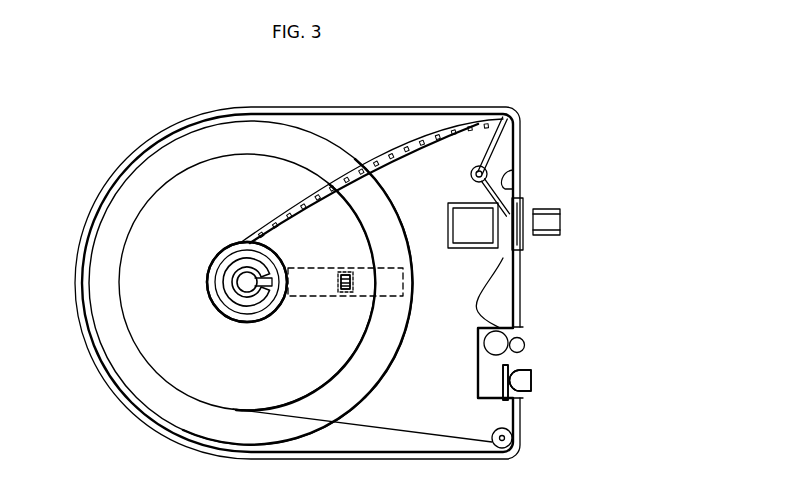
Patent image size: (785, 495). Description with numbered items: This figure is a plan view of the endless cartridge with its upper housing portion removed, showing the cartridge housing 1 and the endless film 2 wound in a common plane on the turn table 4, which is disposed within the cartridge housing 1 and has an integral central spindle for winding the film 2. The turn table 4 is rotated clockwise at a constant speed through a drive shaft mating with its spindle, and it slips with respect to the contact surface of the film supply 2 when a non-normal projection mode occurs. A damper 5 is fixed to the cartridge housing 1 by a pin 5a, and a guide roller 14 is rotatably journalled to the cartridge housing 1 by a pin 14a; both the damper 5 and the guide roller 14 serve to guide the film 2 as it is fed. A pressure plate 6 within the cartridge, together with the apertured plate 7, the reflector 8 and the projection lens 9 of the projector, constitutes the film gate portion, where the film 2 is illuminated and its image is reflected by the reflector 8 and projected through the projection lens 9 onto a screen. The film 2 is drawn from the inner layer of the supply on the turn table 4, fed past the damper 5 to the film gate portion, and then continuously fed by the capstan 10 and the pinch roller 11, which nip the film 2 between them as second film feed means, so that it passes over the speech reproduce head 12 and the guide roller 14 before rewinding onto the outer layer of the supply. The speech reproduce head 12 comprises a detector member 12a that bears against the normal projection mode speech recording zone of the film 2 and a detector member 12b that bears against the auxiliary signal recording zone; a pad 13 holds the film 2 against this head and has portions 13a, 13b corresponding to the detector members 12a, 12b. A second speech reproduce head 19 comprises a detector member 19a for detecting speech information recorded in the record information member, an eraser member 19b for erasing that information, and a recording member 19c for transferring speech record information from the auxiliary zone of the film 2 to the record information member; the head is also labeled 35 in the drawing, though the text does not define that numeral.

The cartridge housing 1 is at (376, 120).
The film 2 is at (279, 168).
The turn table 4 is at (237, 132).
The damper 5 is at (490, 115).
The pin 5a is at (470, 173).
The pressure plate 6 is at (510, 176).
The apertured plate 7 is at (524, 200).
The reflector 8 is at (462, 238).
The projection lens 9 is at (561, 222).
The capstan 10 is at (525, 345).
The pinch roller 11 is at (484, 343).
The speech reproduce head 12 is at (532, 381).
The detector member 12a is at (532, 374).
The detector member 12b is at (584, 364).
The pad 13 is at (503, 380).
The pad portion 13a is at (502, 388).
The pad portion 13b is at (476, 385).
The guide roller 14 is at (495, 432).
The pin 14a is at (512, 437).
The speech reproduce head 19 is at (337, 300).
The hub 35 is at (256, 300).
The detector member 19a is at (347, 294).
The eraser member 19b is at (354, 283).
The recording member 19c is at (340, 274).